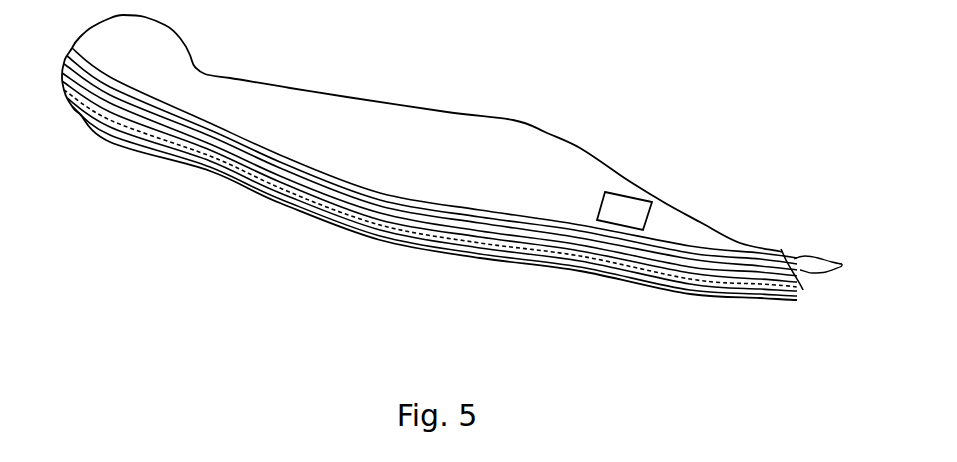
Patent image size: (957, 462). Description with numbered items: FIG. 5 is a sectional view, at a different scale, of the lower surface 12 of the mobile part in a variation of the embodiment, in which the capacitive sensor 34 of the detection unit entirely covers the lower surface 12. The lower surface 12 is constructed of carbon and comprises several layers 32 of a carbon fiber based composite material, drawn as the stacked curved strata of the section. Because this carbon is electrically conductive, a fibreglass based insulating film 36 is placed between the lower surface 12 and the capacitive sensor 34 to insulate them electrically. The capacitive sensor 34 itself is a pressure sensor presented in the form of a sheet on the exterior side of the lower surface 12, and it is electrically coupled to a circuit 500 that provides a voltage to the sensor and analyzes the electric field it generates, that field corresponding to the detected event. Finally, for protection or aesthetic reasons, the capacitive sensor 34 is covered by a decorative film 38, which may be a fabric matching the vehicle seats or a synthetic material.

The lower surface 12 is at (452, 213).
The layers 32 is at (800, 272).
The capacitive sensor 34 is at (695, 285).
The insulating film 36 is at (803, 287).
The decorative film 38 is at (500, 258).
The circuit 500 is at (625, 207).